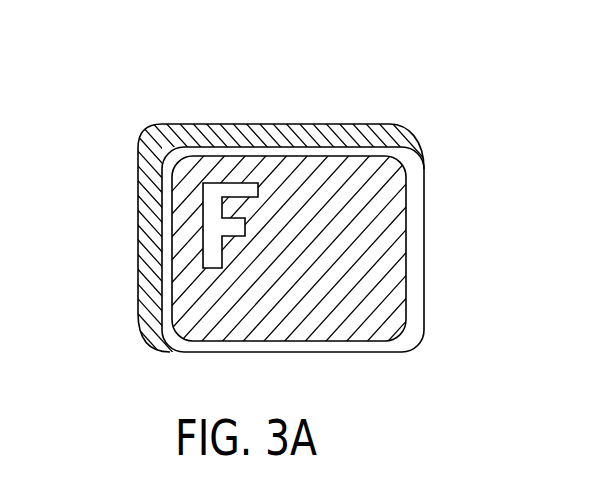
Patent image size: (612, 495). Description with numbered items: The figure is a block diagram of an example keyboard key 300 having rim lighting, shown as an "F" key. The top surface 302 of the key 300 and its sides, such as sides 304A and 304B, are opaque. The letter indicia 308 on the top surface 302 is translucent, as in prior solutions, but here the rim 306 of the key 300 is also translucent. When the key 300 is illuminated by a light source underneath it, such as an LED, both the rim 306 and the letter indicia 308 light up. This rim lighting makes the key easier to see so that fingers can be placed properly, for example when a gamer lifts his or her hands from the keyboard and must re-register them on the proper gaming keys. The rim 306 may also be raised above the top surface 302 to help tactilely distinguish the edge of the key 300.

The keyboard key 300 is at (306, 182).
The top surface 302 is at (404, 252).
The side 304A is at (278, 135).
The side 304B is at (147, 280).
The rim 306 is at (166, 346).
The letter indicia 308 is at (216, 184).